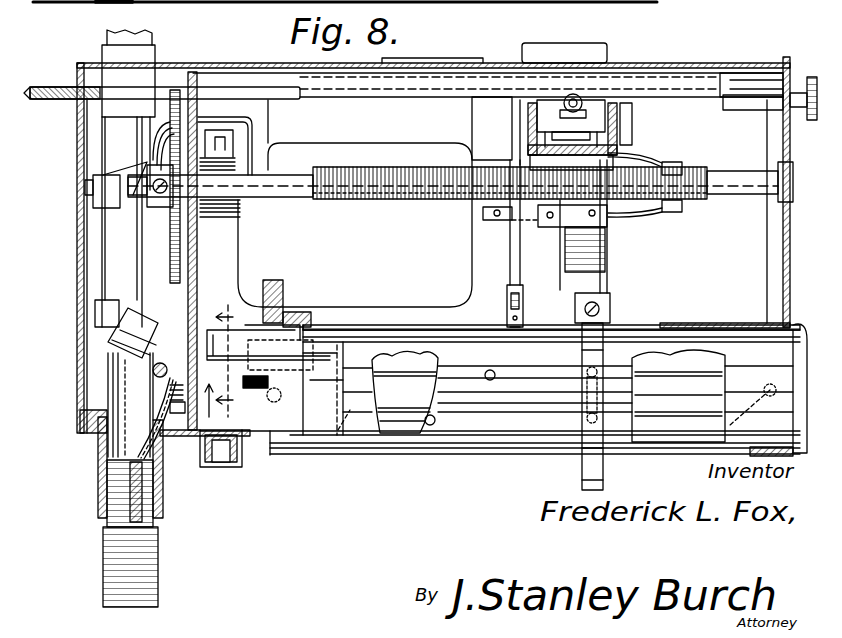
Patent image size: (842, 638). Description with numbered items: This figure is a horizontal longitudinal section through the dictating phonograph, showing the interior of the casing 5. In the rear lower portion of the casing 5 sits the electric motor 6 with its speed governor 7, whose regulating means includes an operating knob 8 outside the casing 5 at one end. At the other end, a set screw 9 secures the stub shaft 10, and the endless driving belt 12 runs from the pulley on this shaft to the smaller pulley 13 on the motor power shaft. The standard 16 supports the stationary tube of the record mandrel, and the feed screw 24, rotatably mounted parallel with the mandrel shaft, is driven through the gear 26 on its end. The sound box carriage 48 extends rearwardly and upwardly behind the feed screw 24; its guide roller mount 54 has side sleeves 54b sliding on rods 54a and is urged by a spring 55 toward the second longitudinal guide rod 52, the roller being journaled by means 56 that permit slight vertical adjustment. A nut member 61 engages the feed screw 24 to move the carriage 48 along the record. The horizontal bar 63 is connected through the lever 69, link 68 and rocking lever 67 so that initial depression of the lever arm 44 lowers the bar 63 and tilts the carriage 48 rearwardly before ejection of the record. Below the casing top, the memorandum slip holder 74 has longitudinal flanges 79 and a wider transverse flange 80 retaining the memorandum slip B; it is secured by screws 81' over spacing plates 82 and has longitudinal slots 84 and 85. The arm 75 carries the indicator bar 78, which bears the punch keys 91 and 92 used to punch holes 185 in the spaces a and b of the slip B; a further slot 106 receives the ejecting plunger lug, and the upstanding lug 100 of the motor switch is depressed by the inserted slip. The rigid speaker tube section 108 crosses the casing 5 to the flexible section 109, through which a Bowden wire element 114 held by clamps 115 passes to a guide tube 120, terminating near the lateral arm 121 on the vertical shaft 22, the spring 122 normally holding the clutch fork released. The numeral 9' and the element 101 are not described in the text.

The casing 5 is at (790, 236).
The electric motor 6 is at (335, 203).
The speed governor 7 is at (646, 214).
The operating knob 8 is at (806, 68).
The set screw 9 is at (207, 404).
The direction arrow 9' is at (806, 370).
The stub shaft 10 is at (226, 352).
The endless driving belt 12 is at (102, 263).
The smaller pulley 13 is at (108, 180).
The standard 16 is at (282, 268).
The vertical shaft 22 is at (143, 312).
The feed screw 24 is at (368, 188).
The gear 26 is at (188, 273).
The upwardly projecting arm 44 is at (295, 292).
The sound box carriage 48 is at (602, 150).
The second longitudinal guide rod 52 is at (228, 88).
The mount 54 is at (535, 128).
The rods 54a is at (676, 128).
The side sleeves 54b is at (658, 108).
The spring 55 is at (473, 203).
The roller journaling means 56 is at (588, 100).
The nut member 61 is at (582, 245).
The horizontal bar 63 is at (702, 77).
The rocking lever 67 is at (522, 320).
The link 68 is at (520, 292).
The lever 69 is at (512, 246).
The memorandum slip holder 74 is at (366, 452).
The arm 75 is at (600, 260).
The indicator bar 78 is at (608, 352).
The inwardly directed flanges 79 is at (362, 342).
The inwardly directed flange 80 is at (290, 448).
The screws 81' is at (521, 408).
The spacing plates 82 is at (536, 400).
The longitudinal slot 84 is at (394, 405).
The longitudinal slot 85 is at (425, 380).
The punch key 91 is at (582, 492).
The punch key 92 is at (582, 468).
The upstanding lug 100 is at (265, 388).
The housing 101 is at (268, 438).
The longitudinal slot 106 is at (318, 326).
The rigid section 108 is at (137, 268).
The second flexible section 109 is at (148, 563).
The Bowden wire element 114 is at (160, 502).
The brackets or clamps 115 is at (100, 470).
The guide tube 120 is at (105, 445).
The lateral arm 121 is at (174, 378).
The spring 122 is at (165, 450).
The holes 185 is at (486, 371).
The memorandum slip B is at (770, 350).
The indicating space a is at (475, 452).
The indicating space b is at (438, 445).